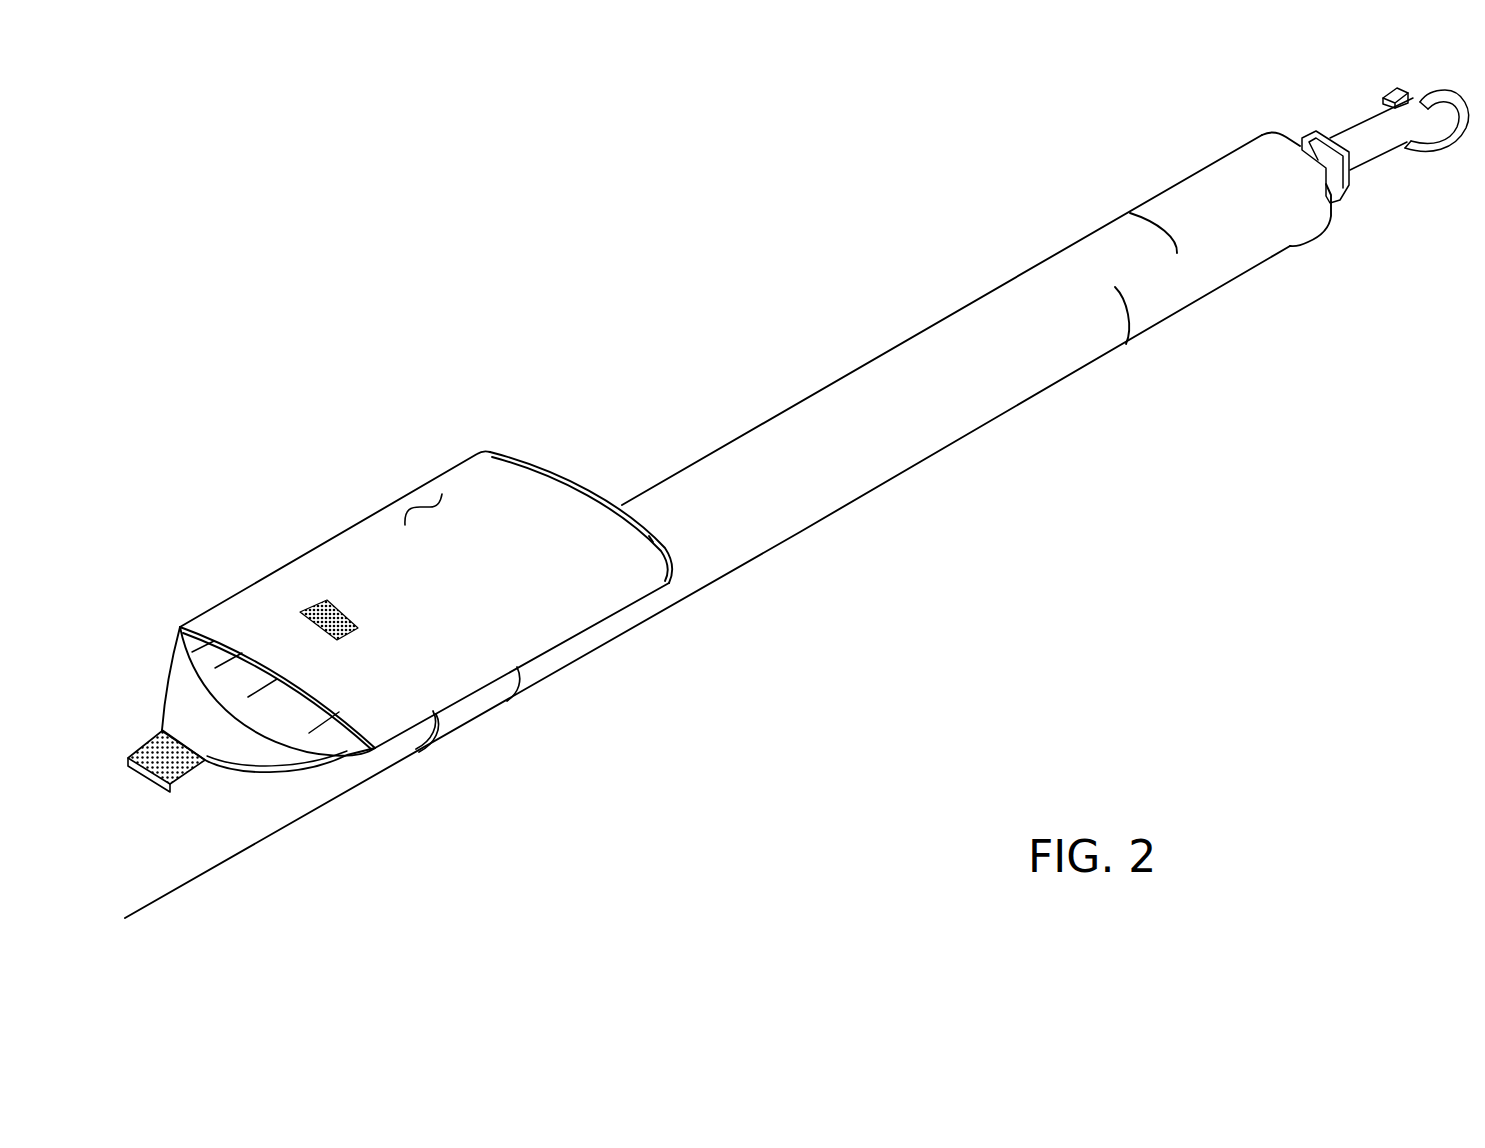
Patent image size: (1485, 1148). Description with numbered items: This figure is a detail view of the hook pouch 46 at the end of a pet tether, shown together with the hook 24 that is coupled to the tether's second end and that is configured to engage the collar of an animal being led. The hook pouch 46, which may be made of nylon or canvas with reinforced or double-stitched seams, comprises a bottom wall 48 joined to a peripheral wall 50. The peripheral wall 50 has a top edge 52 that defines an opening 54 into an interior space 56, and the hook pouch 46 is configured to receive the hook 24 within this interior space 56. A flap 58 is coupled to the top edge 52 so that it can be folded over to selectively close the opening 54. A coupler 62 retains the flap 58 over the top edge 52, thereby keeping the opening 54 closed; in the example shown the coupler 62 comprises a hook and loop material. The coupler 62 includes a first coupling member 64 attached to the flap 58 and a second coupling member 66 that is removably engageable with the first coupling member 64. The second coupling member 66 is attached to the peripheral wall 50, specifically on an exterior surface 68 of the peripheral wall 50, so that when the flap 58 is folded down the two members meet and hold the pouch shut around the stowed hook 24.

The hook 24 is at (1370, 147).
The hook pouch 46 is at (467, 412).
The bottom wall 48 is at (568, 480).
The peripheral wall 50 is at (582, 577).
The top edge 52 is at (373, 733).
The opening 54 is at (347, 744).
The interior space 56 is at (290, 706).
The flap 58 is at (263, 752).
The coupler 62 is at (147, 712).
The first coupling member 64 is at (156, 763).
The second coupling member 66 is at (323, 603).
The exterior surface 68 is at (418, 506).